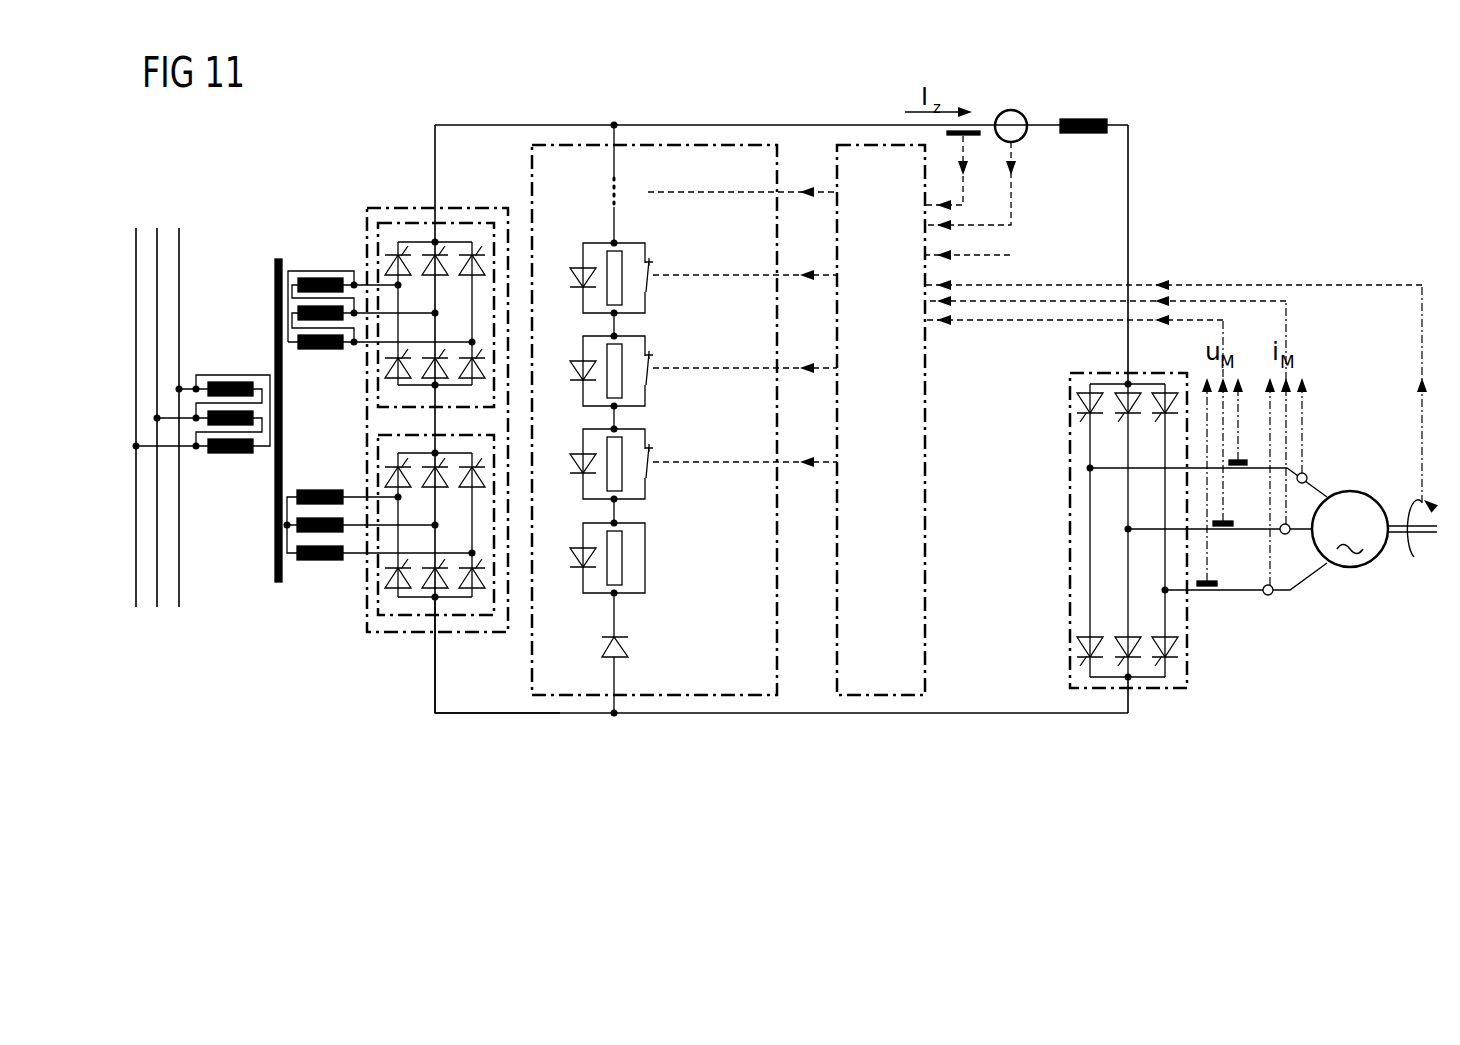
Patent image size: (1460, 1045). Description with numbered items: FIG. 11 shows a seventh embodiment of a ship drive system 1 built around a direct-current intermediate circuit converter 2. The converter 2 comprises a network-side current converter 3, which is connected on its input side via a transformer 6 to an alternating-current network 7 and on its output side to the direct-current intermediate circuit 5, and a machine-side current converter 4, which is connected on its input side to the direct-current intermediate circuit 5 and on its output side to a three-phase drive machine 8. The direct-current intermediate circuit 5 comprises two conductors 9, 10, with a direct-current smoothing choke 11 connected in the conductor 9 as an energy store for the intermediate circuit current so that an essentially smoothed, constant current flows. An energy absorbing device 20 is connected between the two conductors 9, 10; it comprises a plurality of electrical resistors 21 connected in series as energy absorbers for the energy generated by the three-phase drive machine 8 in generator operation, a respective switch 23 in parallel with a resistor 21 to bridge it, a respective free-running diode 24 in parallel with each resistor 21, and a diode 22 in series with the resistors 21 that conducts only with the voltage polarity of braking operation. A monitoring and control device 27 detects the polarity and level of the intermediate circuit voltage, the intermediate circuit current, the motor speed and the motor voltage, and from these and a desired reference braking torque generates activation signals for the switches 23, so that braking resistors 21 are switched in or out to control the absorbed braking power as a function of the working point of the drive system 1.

The drive system 1 is at (1163, 136).
The direct-current intermediate circuit converter 2 is at (1235, 697).
The network-side current converter 3 is at (415, 208).
The machine-side current converter 4 is at (1188, 625).
The direct-current intermediate circuit 5 is at (522, 740).
The transformer 6 is at (276, 545).
The alternating-current network 7 is at (182, 590).
The three-phase drive machine 8 is at (1343, 490).
The conductor 9 is at (687, 125).
The conductor 10 is at (645, 715).
The direct-current smoothing choke 11 is at (1086, 118).
The energy absorbing device 20 is at (650, 143).
The electrical resistor 21 is at (622, 293).
The diode 22 is at (628, 648).
The switch 23 is at (653, 271).
The free-running diode 24 is at (583, 268).
The monitoring and control device 27 is at (860, 145).